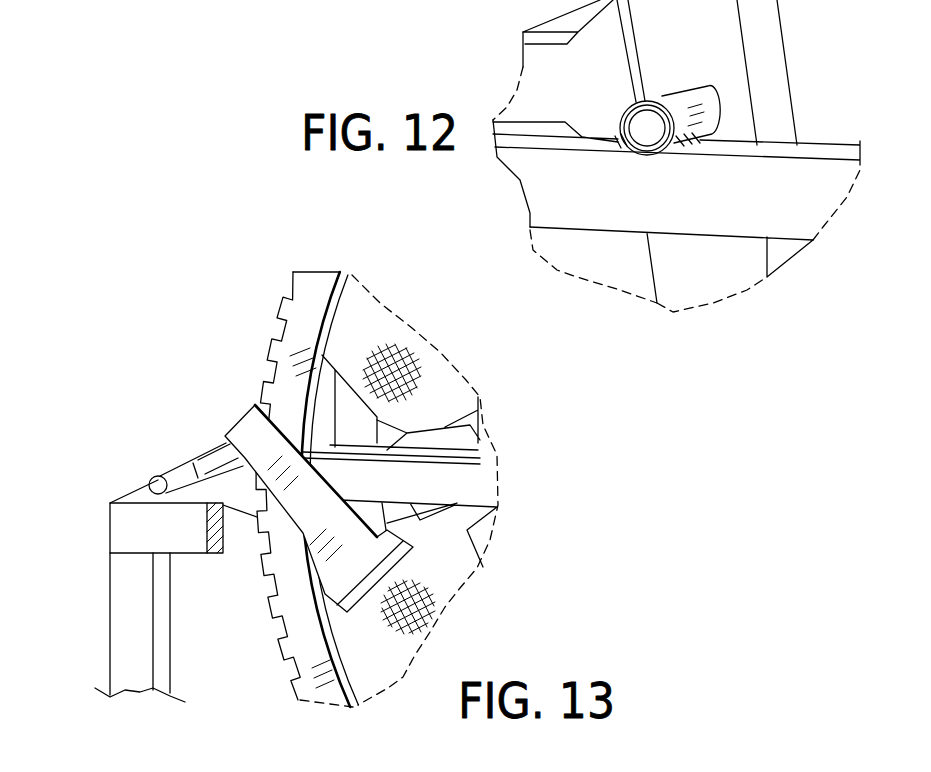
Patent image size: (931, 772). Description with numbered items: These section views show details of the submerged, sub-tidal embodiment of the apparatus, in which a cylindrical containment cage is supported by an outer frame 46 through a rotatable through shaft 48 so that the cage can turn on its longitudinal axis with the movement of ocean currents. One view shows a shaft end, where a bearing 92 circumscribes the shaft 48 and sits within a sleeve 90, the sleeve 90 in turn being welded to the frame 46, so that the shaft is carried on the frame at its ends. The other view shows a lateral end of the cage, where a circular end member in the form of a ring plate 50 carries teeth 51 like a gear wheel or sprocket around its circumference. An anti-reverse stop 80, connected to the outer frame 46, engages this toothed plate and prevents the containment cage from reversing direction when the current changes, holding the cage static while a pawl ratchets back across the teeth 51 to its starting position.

In FIG. 12, the outer frame 46 is at (577, 192).
In FIG. 13, the outer frame 46 is at (133, 622).
In FIG. 12, the through shaft 48 is at (652, 123).
In FIG. 13, the ring plate 50 is at (297, 628).
In FIG. 13, the teeth 51 is at (295, 282).
In FIG. 13, the anti-reverse stop 80 is at (253, 430).
In FIG. 12, the sleeve 90 is at (705, 88).
In FIG. 12, the bearing 92 is at (660, 154).